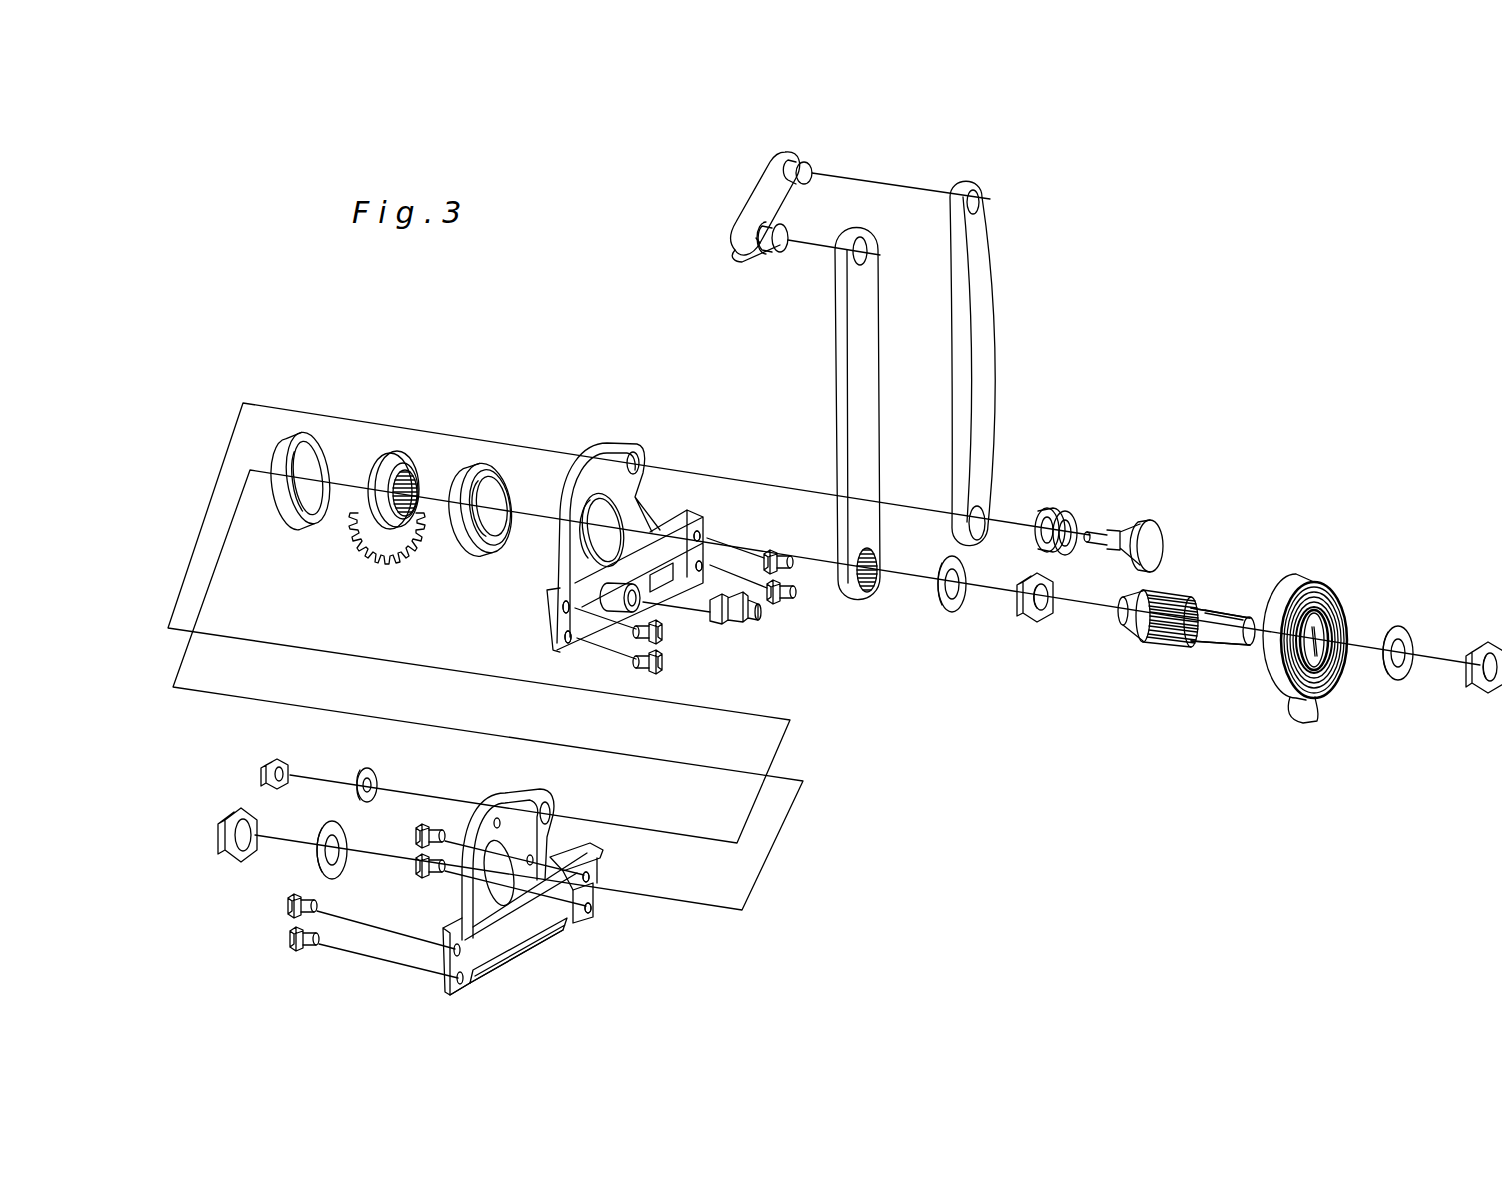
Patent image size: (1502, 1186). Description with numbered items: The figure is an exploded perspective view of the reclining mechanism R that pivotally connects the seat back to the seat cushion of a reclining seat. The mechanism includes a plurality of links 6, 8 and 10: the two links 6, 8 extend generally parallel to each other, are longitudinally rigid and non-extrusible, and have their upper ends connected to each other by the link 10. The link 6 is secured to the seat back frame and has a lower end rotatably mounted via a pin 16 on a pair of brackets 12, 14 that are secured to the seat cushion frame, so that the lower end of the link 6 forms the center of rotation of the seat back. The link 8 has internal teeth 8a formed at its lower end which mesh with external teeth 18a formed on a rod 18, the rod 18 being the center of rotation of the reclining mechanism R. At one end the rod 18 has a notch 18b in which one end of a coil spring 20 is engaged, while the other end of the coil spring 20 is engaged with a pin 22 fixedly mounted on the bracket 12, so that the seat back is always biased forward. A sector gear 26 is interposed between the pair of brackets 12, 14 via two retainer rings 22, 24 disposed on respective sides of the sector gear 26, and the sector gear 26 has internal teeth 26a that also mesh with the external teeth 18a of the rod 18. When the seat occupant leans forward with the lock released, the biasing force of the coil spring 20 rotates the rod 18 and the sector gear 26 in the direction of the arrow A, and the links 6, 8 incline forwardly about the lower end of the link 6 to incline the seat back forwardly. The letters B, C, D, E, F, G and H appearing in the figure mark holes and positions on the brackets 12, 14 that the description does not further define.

The link 6 is at (990, 343).
The link 8 is at (857, 377).
The internal teeth 8a is at (876, 590).
The link 10 is at (757, 195).
The bracket 12 is at (600, 440).
The bracket 14 is at (598, 932).
The pin 16 is at (1134, 530).
The rod 18 is at (1220, 640).
The external teeth 18a is at (1153, 645).
The notch 18b is at (1235, 612).
The coil spring 20 is at (1338, 590).
The pin / retainer ring 22 is at (478, 462).
The retainer ring 24 is at (303, 436).
The sector gear 26 is at (393, 453).
The internal teeth 26a is at (420, 510).
The reclining mechanism R is at (1263, 378).
The arrow A is at (1117, 590).
The slot B is at (467, 983).
The hole C is at (563, 606).
The hole D is at (565, 636).
The hole E is at (590, 879).
The hole F is at (592, 909).
The hole G is at (700, 538).
The hole H is at (703, 566).